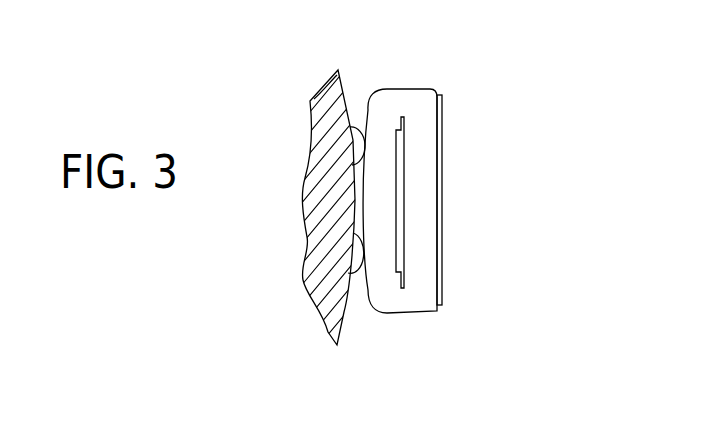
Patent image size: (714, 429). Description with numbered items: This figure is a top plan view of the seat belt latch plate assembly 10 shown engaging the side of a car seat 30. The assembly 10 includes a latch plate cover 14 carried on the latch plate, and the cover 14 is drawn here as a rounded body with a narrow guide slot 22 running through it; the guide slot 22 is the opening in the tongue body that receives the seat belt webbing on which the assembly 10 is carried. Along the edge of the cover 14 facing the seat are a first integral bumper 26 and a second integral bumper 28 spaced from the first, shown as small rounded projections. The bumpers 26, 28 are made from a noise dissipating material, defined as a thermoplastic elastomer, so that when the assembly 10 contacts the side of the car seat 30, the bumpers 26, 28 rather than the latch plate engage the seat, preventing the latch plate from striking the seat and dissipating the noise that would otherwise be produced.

The seat belt latch plate assembly 10 is at (523, 95).
The latch plate cover 14 is at (410, 308).
The guide slot 22 is at (405, 218).
The first integral bumper 26 is at (353, 145).
The second integral bumper 28 is at (357, 255).
The side of a car seat 30 is at (347, 102).